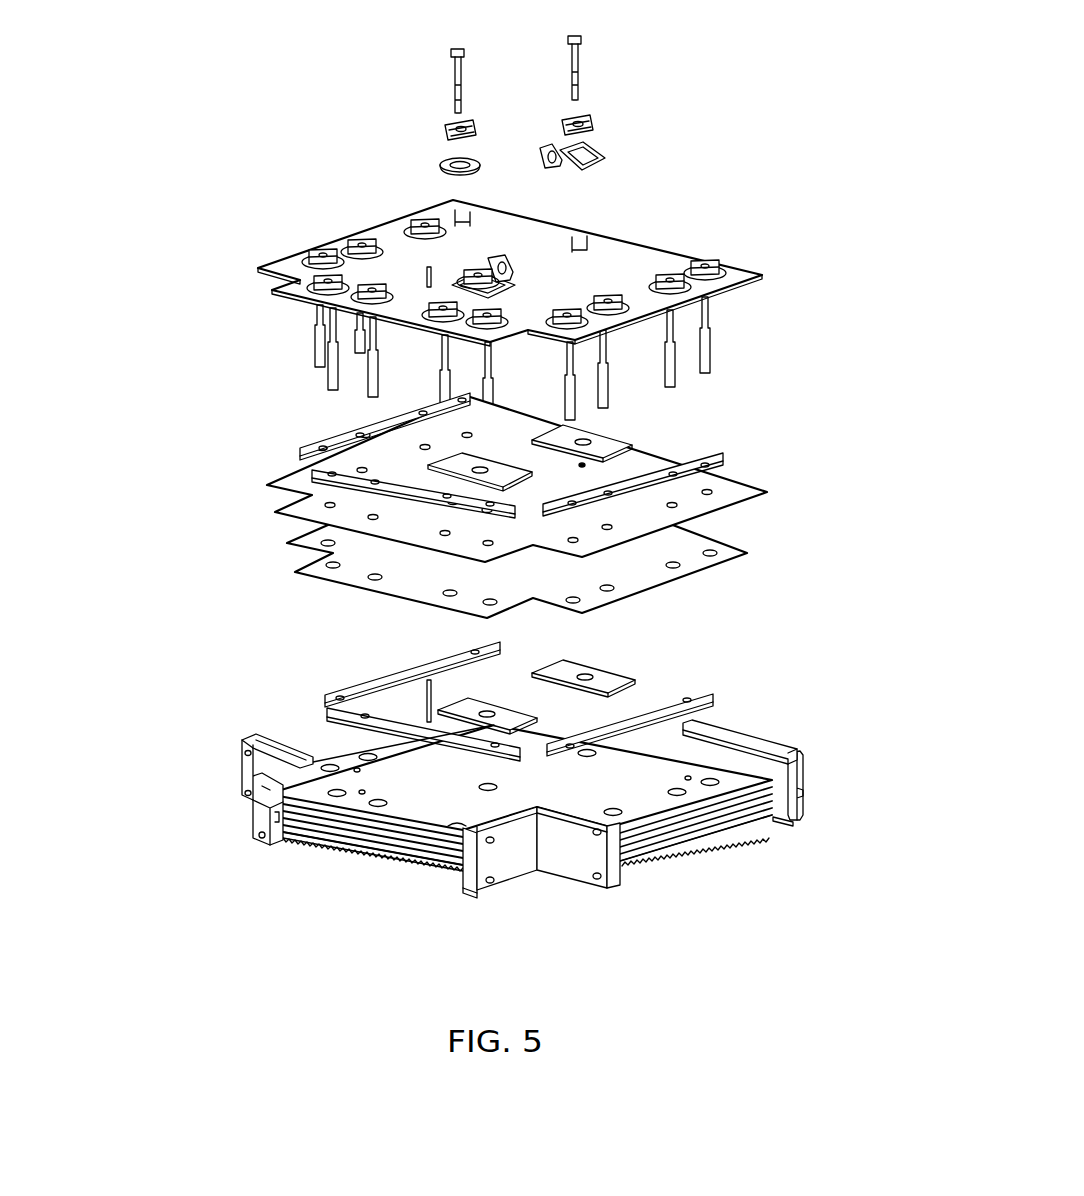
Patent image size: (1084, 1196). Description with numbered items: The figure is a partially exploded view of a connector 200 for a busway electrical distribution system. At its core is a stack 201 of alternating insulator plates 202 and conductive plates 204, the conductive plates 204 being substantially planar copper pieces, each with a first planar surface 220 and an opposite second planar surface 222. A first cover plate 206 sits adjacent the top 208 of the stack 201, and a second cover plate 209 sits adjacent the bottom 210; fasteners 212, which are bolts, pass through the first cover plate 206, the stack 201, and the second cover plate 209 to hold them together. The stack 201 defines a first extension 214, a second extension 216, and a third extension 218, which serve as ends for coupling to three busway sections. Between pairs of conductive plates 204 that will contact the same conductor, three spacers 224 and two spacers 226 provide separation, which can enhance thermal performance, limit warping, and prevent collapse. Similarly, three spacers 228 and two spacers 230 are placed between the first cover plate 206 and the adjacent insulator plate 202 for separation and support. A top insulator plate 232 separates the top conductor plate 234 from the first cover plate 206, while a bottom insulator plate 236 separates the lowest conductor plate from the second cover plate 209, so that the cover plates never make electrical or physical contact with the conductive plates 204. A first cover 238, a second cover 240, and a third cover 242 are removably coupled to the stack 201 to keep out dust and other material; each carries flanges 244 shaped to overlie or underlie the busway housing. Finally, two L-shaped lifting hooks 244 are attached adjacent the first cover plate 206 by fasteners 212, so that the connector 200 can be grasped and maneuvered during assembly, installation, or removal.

The connector 200 is at (523, 488).
The stack 201 is at (523, 540).
The insulator plates 202 is at (467, 659).
The conductive plates 204 is at (467, 642).
The first cover plate 206 is at (263, 265).
The top 208 is at (467, 650).
The second cover plate 209 is at (450, 862).
The bottom 210 is at (692, 862).
The fasteners 212 is at (466, 74).
The first extension 214 is at (333, 732).
The second extension 216 is at (737, 860).
The third extension 218 is at (360, 882).
The first planar surface 220 is at (660, 570).
The second planar surface 222 is at (632, 606).
The spacers 224 is at (395, 677).
The spacers 226 is at (628, 672).
The spacers 228 is at (335, 437).
The spacers 230 is at (467, 455).
The top insulator plate 232 is at (262, 478).
The top conductor plate 234 is at (455, 555).
The bottom insulator plate 236 is at (410, 872).
The first cover 238 is at (255, 803).
The second cover 240 is at (500, 876).
The third cover 242 is at (805, 795).
The lifting hooks 244 is at (600, 156).